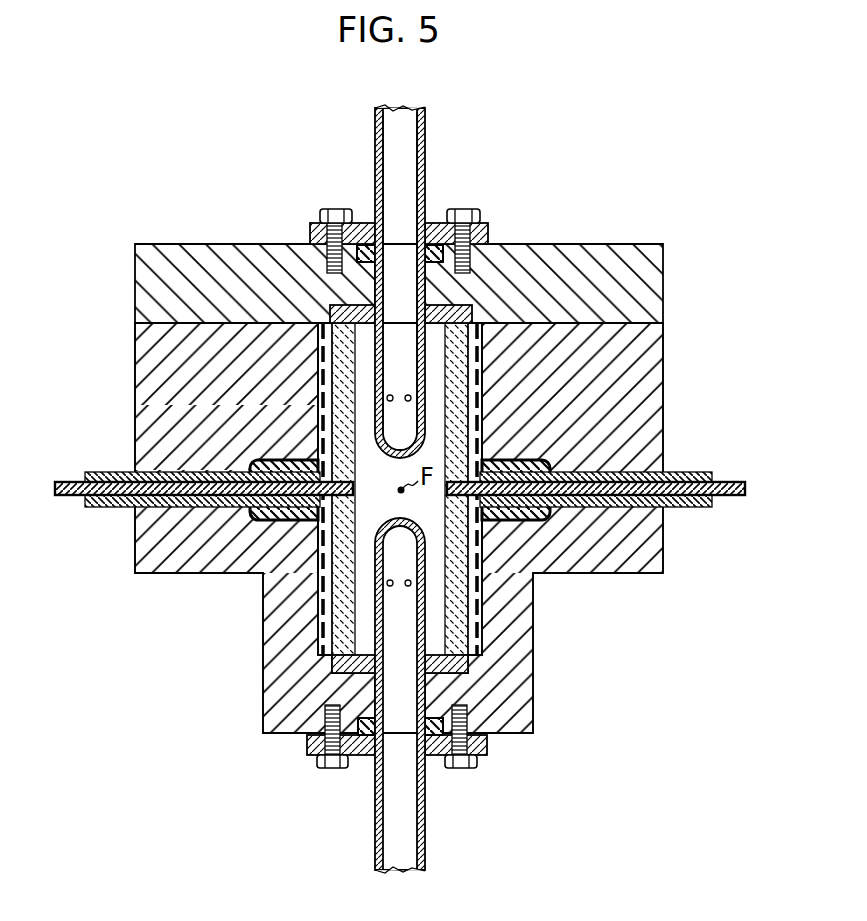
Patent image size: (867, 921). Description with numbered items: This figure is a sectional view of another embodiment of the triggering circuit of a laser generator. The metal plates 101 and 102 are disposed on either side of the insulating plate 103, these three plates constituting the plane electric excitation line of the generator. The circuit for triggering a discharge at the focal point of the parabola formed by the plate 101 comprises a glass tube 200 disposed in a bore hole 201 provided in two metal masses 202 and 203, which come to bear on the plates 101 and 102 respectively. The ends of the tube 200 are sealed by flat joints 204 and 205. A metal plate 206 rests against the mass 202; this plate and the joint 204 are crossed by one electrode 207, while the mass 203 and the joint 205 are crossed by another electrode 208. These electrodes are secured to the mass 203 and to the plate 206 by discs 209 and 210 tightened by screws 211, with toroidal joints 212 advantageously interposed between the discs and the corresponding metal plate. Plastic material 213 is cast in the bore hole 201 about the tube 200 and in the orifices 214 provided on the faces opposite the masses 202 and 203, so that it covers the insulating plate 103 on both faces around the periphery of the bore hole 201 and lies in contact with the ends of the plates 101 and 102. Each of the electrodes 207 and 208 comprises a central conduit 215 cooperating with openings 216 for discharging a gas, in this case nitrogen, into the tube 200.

The glass tube 200 is at (482, 372).
The metal mass 202 is at (165, 373).
The metal plate 102 is at (594, 448).
The metal mass 203 is at (636, 558).
The metal plate 206 is at (188, 262).
The bore hole 201 is at (486, 381).
The plastic material 213 is at (317, 353).
The flat joint 204 is at (472, 312).
The flat joint 205 is at (468, 664).
The disc 209 is at (360, 232).
The disc 210 is at (308, 745).
The toroidal joint 212 is at (435, 220).
The nut 211 is at (483, 215).
The orifice 214 is at (555, 445).
The metal plate 101 is at (695, 471).
The insulating plate 103 is at (731, 496).
The electrode 207 is at (420, 142).
The central conduit 215 is at (398, 143).
The opening 216 is at (387, 398).
The electrode 208 is at (425, 815).